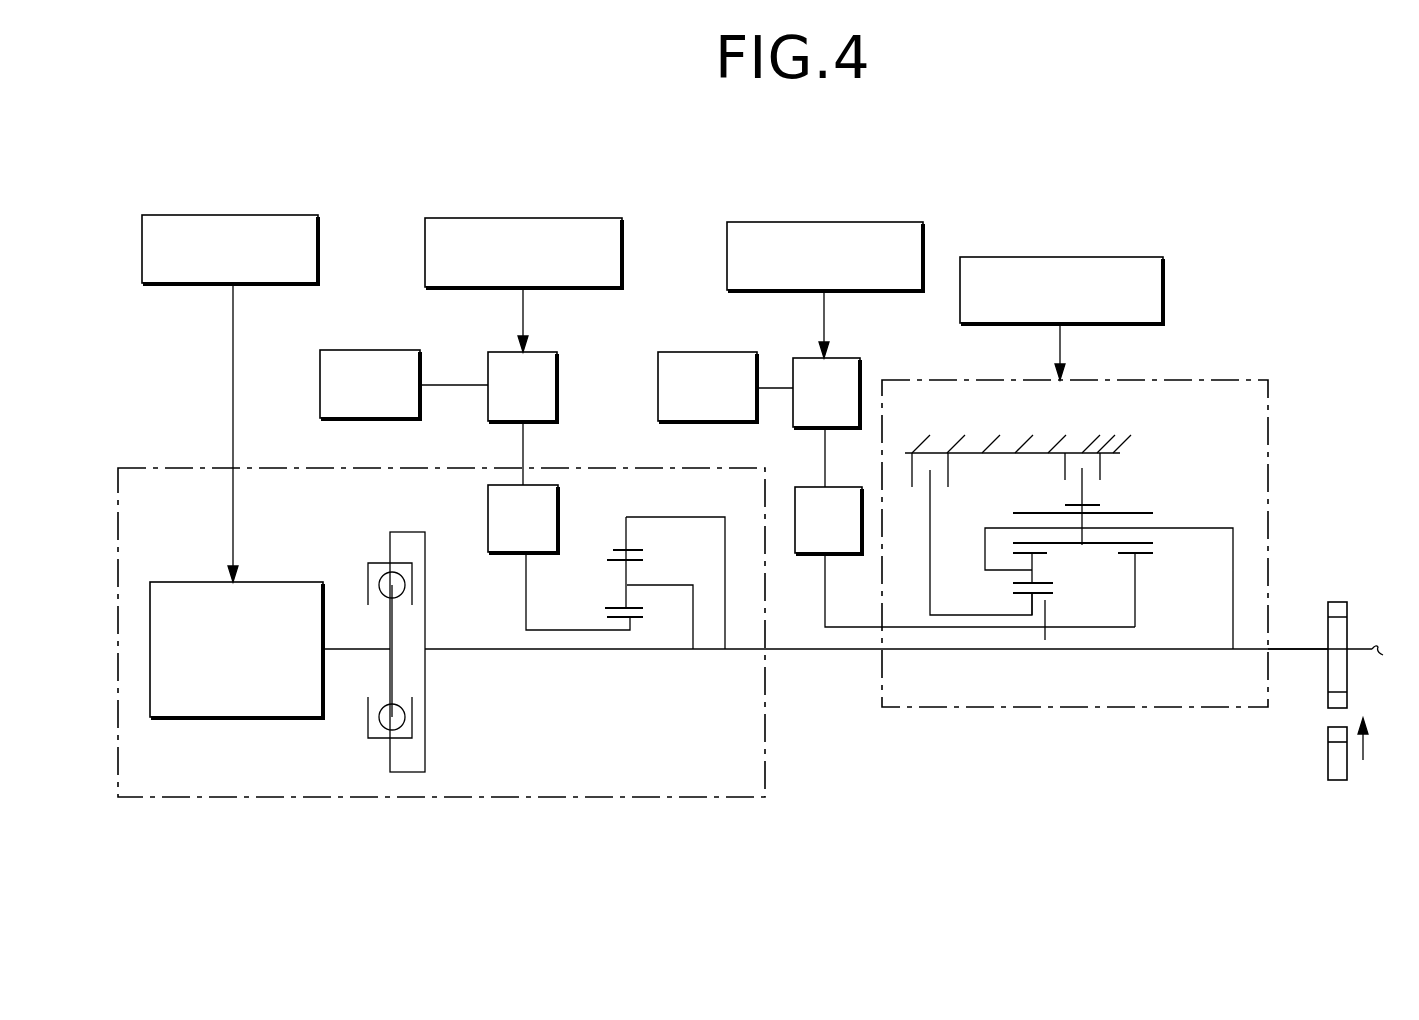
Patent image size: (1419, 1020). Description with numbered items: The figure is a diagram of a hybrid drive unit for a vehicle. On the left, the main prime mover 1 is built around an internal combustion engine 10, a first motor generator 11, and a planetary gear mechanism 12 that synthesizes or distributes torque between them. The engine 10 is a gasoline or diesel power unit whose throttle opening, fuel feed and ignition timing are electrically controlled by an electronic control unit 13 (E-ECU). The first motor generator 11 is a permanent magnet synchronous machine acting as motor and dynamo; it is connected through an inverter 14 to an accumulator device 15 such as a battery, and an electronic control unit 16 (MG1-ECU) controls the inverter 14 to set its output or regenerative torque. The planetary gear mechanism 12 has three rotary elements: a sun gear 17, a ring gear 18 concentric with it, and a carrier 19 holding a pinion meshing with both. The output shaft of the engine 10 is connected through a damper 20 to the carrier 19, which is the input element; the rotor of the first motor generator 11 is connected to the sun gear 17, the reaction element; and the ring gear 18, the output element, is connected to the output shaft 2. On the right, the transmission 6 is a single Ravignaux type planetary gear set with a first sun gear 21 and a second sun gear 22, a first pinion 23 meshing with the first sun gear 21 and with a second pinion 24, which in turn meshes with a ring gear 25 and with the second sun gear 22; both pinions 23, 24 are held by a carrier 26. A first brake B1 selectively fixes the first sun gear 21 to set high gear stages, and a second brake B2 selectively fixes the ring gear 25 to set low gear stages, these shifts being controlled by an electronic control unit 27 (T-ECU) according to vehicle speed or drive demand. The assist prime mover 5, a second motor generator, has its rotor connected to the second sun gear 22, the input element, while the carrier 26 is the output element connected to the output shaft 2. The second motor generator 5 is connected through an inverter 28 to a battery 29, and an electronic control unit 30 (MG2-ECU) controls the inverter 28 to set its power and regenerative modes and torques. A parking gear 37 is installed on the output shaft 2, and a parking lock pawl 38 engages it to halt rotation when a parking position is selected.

The main prime mover 1 is at (650, 798).
The output shaft 2 is at (1300, 655).
The assist prime mover 5 is at (808, 555).
The transmission 6 is at (1270, 392).
The internal combustion engine 10 is at (280, 718).
The first motor generator 11 is at (488, 512).
The planetary gear mechanism 12 is at (598, 668).
The electronic control unit (E-ECU) 13 is at (298, 215).
The inverter 14 is at (550, 352).
The accumulator device 15 is at (380, 350).
The electronic control unit (MG1-ECU) 16 is at (580, 218).
The sun gear 17 is at (635, 620).
The ring gear 18 is at (613, 548).
The carrier 19 is at (658, 585).
The damper 20 is at (379, 740).
The first sun gear 21 is at (1045, 598).
The second sun gear 22 is at (1145, 556).
The first pinion 23 is at (1045, 586).
The second pinion 24 is at (1025, 512).
The ring gear 25 is at (1095, 506).
The carrier 26 is at (1200, 528).
The electronic control unit (T-ECU) 27 is at (1131, 257).
The inverter 28 is at (850, 358).
The battery 29 is at (710, 352).
The electronic control unit (MG2-ECU) 30 is at (882, 222).
The parking gear 37 is at (1344, 601).
The parking lock pawl 38 is at (1328, 776).
The first brake B1 is at (940, 450).
The second brake B2 is at (1100, 450).